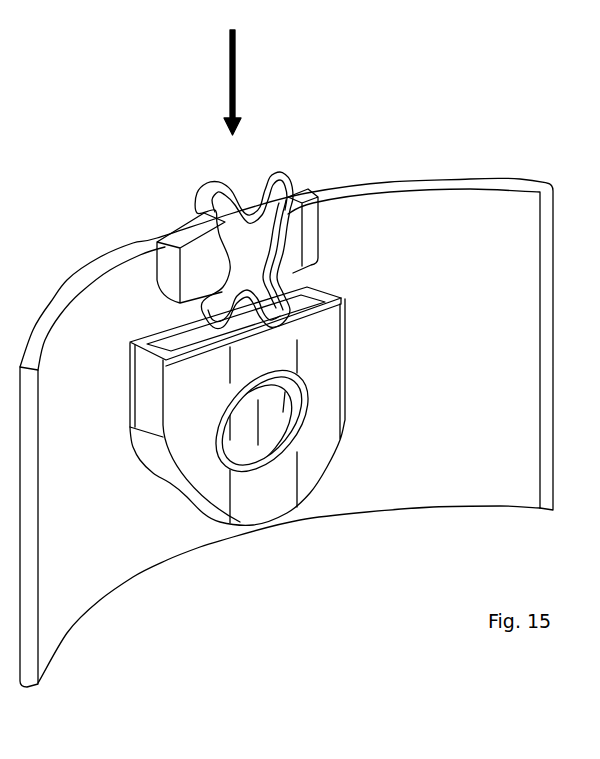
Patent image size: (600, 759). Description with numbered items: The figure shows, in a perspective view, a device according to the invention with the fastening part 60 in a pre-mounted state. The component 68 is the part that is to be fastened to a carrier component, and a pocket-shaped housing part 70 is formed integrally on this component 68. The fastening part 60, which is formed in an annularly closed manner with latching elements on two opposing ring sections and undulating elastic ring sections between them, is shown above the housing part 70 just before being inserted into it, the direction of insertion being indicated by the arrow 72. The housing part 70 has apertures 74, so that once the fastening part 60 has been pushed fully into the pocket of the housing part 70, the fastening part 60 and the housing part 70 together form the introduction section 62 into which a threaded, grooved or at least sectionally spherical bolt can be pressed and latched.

The fastening part 60 is at (192, 185).
The introduction section 62 is at (283, 415).
The component 68 is at (435, 213).
The housing part 70 is at (197, 483).
The arrow 72 is at (235, 82).
The apertures 74 is at (283, 440).